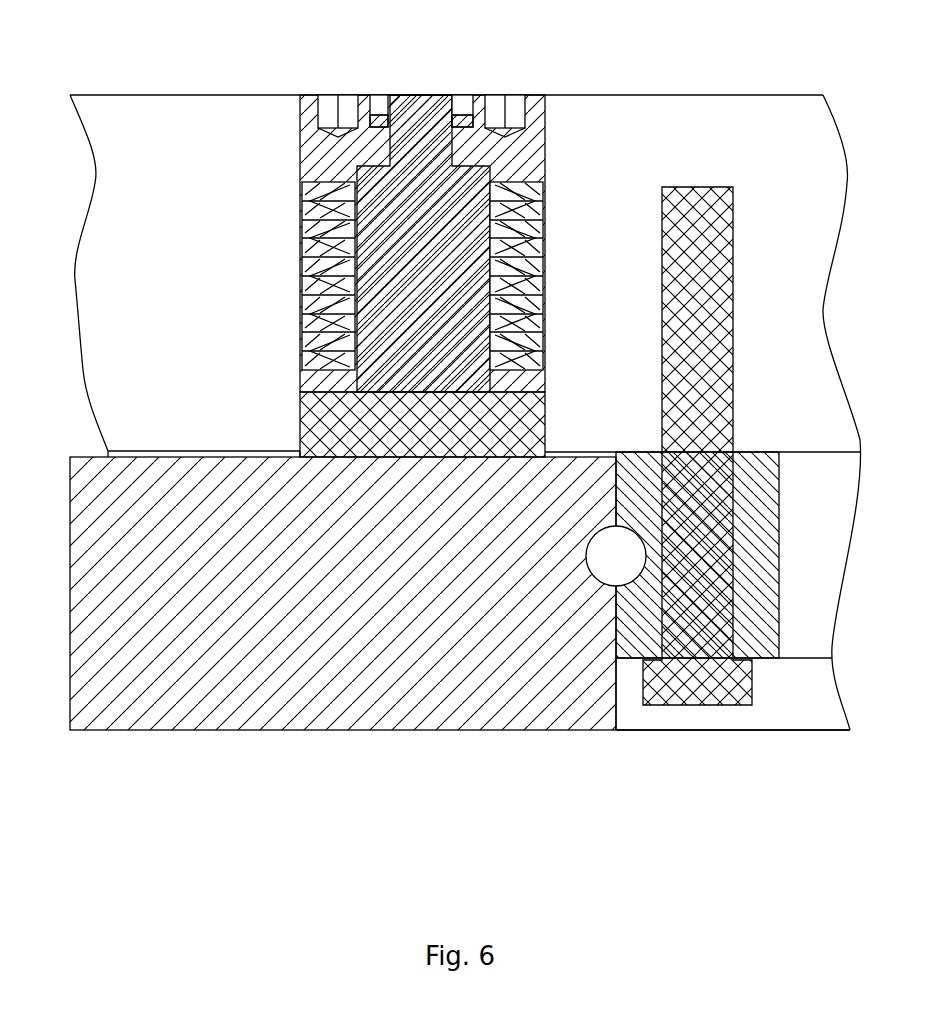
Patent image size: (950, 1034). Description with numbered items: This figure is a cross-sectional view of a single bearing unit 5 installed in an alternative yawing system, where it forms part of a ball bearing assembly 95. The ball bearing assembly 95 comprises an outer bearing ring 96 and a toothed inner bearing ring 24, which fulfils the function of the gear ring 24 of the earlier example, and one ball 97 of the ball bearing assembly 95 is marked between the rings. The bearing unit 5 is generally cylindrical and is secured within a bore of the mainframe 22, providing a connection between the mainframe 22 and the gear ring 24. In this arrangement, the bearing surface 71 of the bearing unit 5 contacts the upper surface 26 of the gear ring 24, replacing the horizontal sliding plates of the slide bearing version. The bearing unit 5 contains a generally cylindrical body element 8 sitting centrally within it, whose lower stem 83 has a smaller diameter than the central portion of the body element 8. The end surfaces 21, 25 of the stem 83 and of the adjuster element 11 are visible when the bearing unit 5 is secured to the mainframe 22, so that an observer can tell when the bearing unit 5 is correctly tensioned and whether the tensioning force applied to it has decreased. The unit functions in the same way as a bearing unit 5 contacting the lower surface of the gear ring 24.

The bearing unit 5 is at (466, 428).
The body element 8 is at (405, 283).
The adjuster element 11 is at (303, 135).
The end surface 21 is at (425, 95).
The mainframe 22 is at (735, 113).
The toothed inner bearing ring 24 is at (100, 578).
The end surface 25 is at (362, 95).
The upper surface 26 is at (88, 457).
The bearing surface 71 is at (305, 430).
The stem 83 is at (432, 143).
The ball bearing assembly 95 is at (766, 697).
The outer bearing ring 96 is at (757, 475).
The ball 97 is at (615, 560).